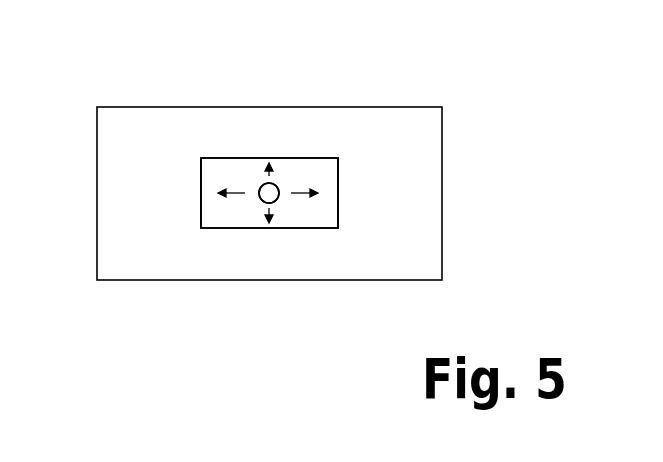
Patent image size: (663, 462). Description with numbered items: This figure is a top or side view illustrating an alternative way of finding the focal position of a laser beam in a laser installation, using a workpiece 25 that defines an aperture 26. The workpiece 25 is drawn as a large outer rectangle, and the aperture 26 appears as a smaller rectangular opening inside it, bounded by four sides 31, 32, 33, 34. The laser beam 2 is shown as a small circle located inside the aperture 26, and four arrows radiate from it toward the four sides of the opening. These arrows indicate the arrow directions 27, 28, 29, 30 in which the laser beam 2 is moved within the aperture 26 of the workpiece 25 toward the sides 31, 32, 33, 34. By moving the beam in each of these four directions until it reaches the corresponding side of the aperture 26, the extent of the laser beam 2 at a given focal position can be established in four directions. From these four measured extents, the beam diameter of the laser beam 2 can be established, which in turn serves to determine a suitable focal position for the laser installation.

The laser beam 2 is at (278, 186).
The workpiece 25 is at (425, 146).
The aperture 26 is at (314, 222).
The arrow direction 27 is at (264, 203).
The arrow direction 28 is at (235, 190).
The arrow direction 29 is at (272, 164).
The arrow direction 30 is at (305, 184).
The side of the aperture 31 is at (339, 197).
The side of the aperture 32 is at (270, 226).
The side of the aperture 33 is at (201, 193).
The side of the aperture 34 is at (218, 158).